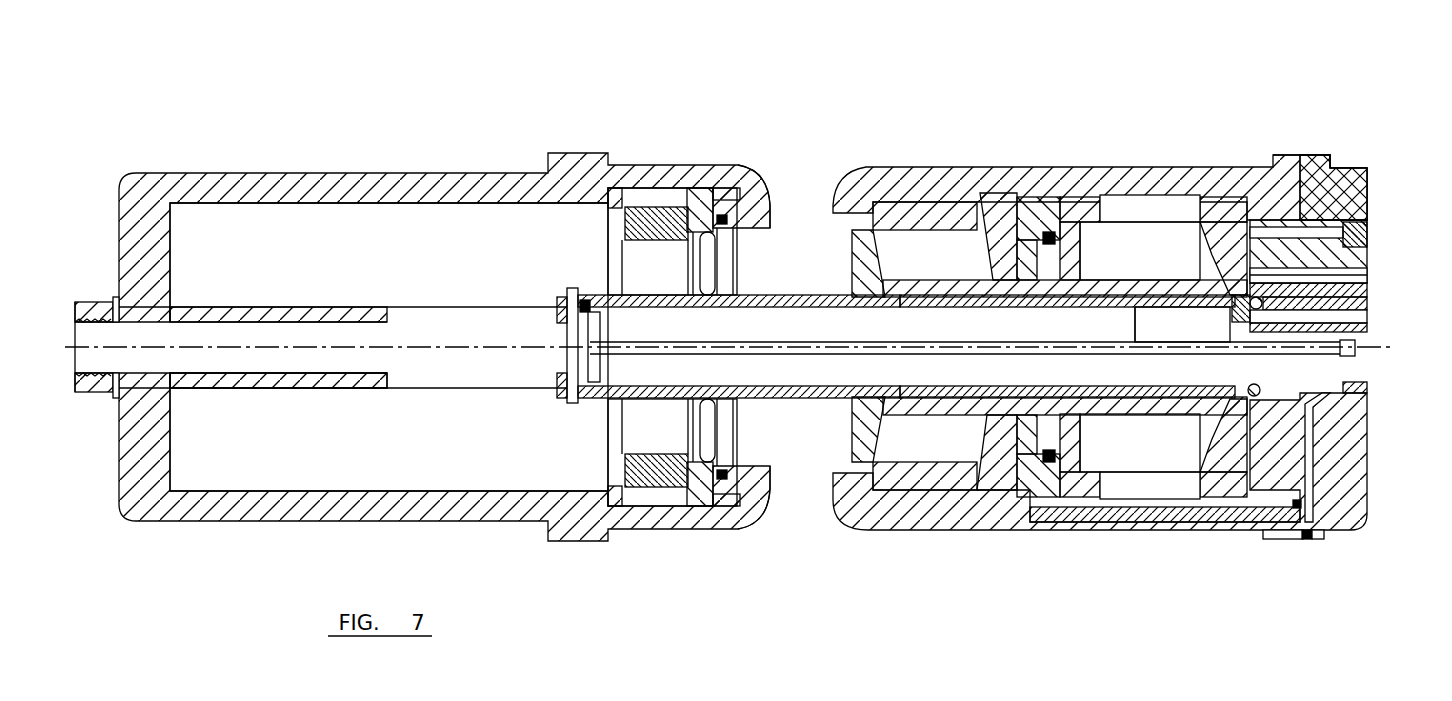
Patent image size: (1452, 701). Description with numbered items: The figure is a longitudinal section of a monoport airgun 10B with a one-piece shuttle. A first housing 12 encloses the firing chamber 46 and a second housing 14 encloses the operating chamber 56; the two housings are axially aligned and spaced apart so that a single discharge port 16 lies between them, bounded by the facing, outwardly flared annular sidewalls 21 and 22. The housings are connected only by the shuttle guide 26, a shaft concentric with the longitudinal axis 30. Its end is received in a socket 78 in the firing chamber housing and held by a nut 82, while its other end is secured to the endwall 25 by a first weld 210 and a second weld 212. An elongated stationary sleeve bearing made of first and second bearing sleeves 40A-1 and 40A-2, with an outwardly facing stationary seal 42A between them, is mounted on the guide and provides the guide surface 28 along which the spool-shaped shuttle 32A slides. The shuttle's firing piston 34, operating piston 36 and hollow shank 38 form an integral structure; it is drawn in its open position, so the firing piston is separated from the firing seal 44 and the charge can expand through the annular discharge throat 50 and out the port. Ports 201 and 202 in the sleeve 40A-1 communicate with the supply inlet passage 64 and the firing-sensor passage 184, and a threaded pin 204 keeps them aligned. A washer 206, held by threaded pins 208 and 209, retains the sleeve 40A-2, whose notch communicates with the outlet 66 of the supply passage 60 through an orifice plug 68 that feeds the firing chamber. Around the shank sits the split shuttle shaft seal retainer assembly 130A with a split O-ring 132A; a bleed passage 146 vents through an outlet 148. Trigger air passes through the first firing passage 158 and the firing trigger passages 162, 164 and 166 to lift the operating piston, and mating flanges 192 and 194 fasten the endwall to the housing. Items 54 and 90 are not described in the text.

The monoport airgun 10B is at (290, 110).
The first housing 12 is at (385, 165).
The second housing 14 is at (1172, 163).
The discharge port 16 is at (797, 200).
The annular sidewall 21 is at (742, 172).
The annular sidewall 22 is at (855, 172).
The endwall 25 is at (1368, 195).
The shuttle guide means 26 is at (452, 390).
The guide surface 28 is at (818, 392).
The longitudinal axis 30 is at (292, 345).
The shuttle 32A is at (1172, 268).
The firing piston 34 is at (880, 245).
The operating piston 36 is at (1238, 298).
The hollow shank 38 is at (1090, 285).
The first bearing sleeve 40A-1 is at (1010, 300).
The second bearing sleeve 40A-2 is at (745, 300).
The stationary seal 42A is at (930, 300).
The firing seal 44 is at (730, 226).
The firing chamber 46 is at (396, 276).
The discharge throat 50 is at (640, 292).
The end block 54 is at (1310, 232).
The operating chamber 56 is at (1118, 455).
The pressurized gaseous supply passage 60 is at (900, 355).
The supply inlet passage 64 is at (1130, 326).
The outlet 66 is at (600, 350).
The orifice plug 68 is at (600, 305).
The socket 78 is at (322, 388).
The nut 82 is at (103, 392).
The seal carrier 90 is at (606, 244).
The shuttle shaft seal retainer assembly 130A is at (975, 258).
The split O-ring 132A is at (1040, 397).
The bleed passage 146 is at (1055, 232).
The outlet 148 is at (1045, 232).
The first firing passage 158 is at (1345, 268).
The firing trigger passage 162 is at (1312, 465).
The firing trigger passage 164 is at (1170, 522).
The firing trigger passage 166 is at (1027, 500).
The firing-sensor passage 184 is at (1345, 325).
The mating flange 192 is at (1278, 539).
The mating flange 194 is at (1318, 540).
The port 201 is at (1135, 330).
The port 202 is at (1218, 305).
The threaded pin 204 is at (1238, 322).
The washer 206 is at (585, 403).
The threaded pin 208 is at (560, 303).
The threaded pin 209 is at (558, 393).
The first weld 210 is at (1362, 303).
The second weld 212 is at (1340, 300).